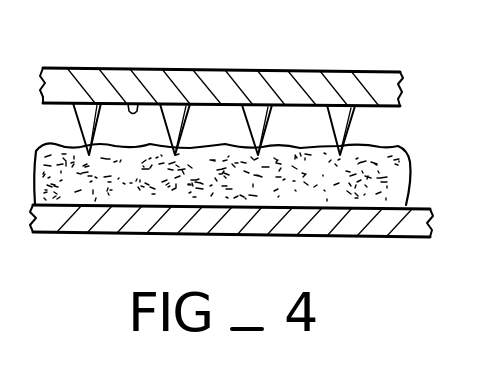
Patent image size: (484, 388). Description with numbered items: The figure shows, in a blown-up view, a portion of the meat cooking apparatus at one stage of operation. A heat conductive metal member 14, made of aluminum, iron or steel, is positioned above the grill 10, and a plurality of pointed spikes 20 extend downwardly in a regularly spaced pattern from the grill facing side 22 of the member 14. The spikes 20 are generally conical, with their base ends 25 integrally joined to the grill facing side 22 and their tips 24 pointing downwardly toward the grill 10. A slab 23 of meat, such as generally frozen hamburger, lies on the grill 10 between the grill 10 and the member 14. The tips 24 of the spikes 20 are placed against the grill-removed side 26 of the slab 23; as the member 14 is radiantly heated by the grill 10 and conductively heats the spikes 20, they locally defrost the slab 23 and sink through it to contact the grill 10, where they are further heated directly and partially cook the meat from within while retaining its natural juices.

The grill 10 is at (432, 205).
The member 14 is at (339, 70).
The pointed spikes 20 is at (353, 108).
The grill facing side 22 is at (133, 112).
The slab of meat 23 is at (409, 168).
The tips 24 is at (275, 148).
The base ends 25 is at (243, 104).
The grill-removed side 26 is at (77, 67).